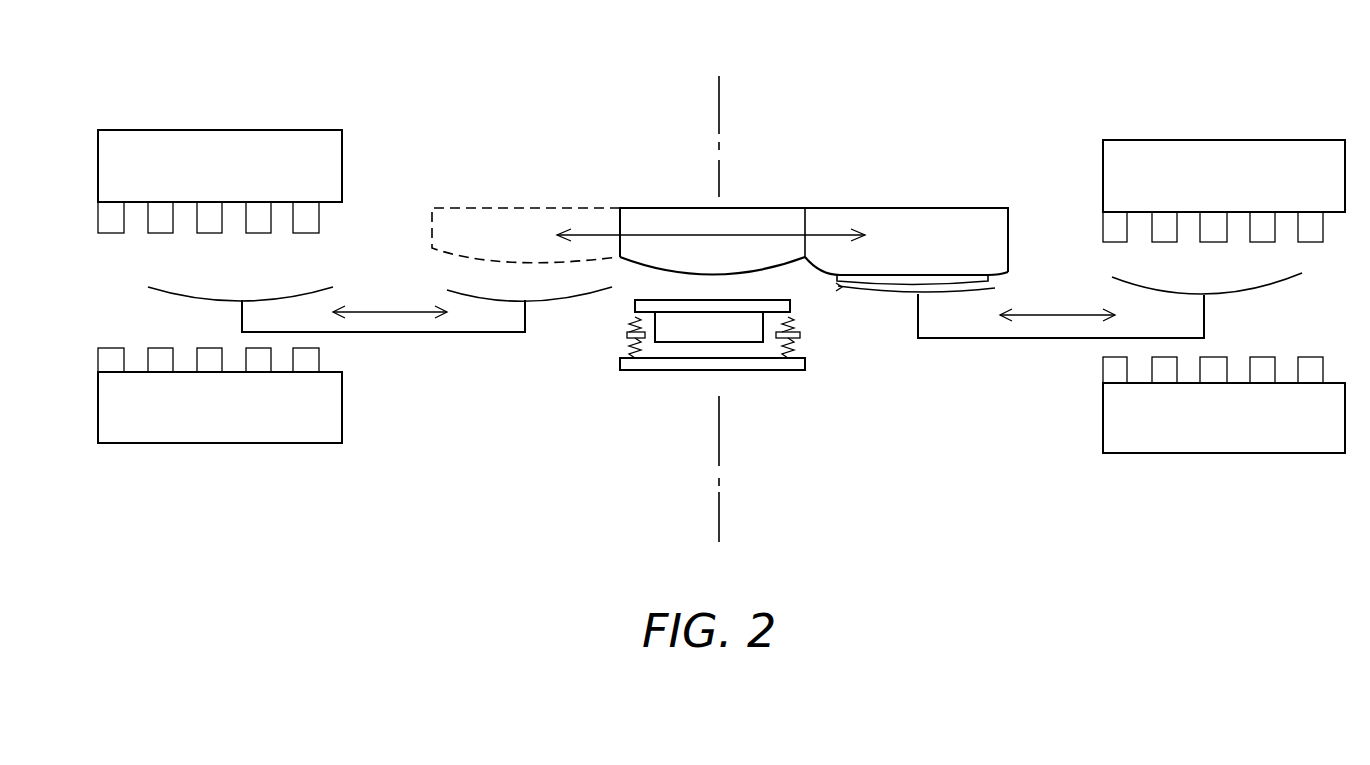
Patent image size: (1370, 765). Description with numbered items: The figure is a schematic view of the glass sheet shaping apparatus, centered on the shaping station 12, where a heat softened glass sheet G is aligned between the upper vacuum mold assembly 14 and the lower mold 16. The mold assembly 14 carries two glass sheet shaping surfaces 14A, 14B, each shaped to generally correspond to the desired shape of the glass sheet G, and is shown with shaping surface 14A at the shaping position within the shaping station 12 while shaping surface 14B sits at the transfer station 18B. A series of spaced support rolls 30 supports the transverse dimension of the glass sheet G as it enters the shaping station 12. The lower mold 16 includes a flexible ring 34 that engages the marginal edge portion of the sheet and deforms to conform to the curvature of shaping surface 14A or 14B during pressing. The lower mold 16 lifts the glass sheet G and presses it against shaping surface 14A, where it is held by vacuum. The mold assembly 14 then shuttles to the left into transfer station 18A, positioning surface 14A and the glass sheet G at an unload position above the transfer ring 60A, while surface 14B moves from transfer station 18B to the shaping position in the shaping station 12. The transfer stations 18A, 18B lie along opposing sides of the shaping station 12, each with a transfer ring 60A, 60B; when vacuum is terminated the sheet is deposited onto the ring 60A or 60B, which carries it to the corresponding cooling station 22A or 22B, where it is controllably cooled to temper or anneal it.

The shaping station 12 is at (731, 50).
The upper vacuum mold assembly 14 is at (958, 208).
The glass sheet shaping surface 14A is at (638, 262).
The glass sheet shaping surface 14B is at (893, 284).
The lower mold 16 is at (680, 370).
The transfer station 18A is at (533, 48).
The transfer station 18B is at (918, 50).
The cooling station 22A is at (230, 48).
The cooling station 22B is at (1228, 50).
The support rolls 30 is at (723, 342).
The flexible ring 34 is at (797, 317).
The transfer ring 60A is at (165, 292).
The transfer ring 60B is at (1280, 283).
The glass sheet G is at (840, 287).